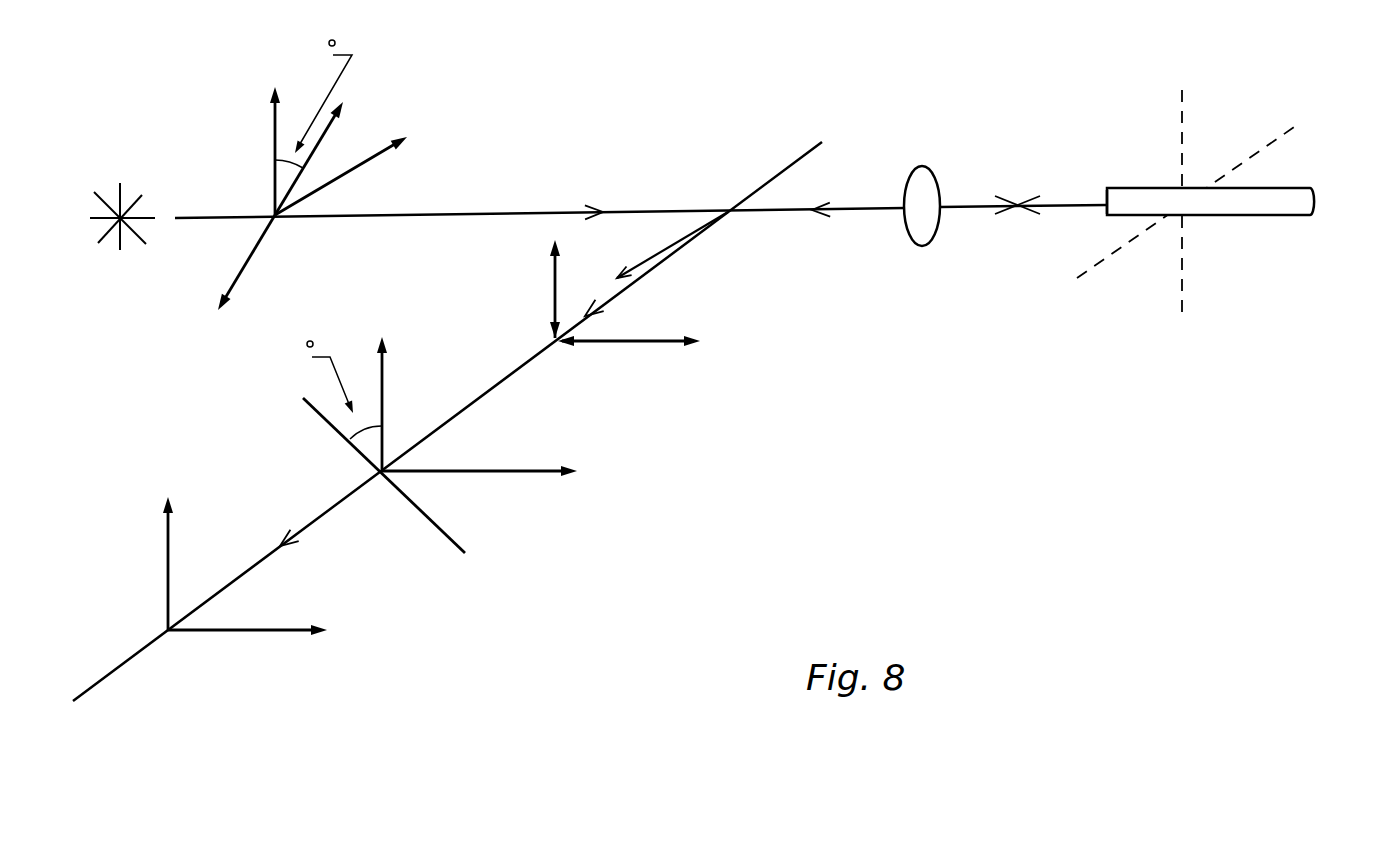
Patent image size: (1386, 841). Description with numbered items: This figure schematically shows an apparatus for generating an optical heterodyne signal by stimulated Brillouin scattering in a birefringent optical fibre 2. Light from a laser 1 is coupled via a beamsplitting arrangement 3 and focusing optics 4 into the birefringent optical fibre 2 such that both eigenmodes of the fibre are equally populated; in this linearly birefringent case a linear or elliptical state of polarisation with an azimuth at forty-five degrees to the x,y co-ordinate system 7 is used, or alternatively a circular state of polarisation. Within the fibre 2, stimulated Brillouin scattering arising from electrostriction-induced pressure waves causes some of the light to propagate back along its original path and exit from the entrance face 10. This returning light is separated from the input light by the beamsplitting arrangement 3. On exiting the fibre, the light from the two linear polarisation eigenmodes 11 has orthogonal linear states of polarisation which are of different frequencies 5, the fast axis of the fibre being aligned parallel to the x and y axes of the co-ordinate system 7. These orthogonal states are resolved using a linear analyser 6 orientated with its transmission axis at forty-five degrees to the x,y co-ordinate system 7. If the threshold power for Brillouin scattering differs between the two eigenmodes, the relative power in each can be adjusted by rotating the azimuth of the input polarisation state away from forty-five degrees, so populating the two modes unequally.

The laser 1 is at (122, 187).
The birefringent optical fibre 2 is at (1283, 158).
The beamsplitting arrangement 3 is at (447, 395).
The focusing optics 4 is at (908, 165).
The different frequencies 5 is at (693, 351).
The linear analyser 6 is at (440, 439).
The x,y co-ordinate system 7 is at (317, 367).
The entrance face 10 is at (1060, 227).
The linear polarisation eigenmodes 11 is at (1187, 197).